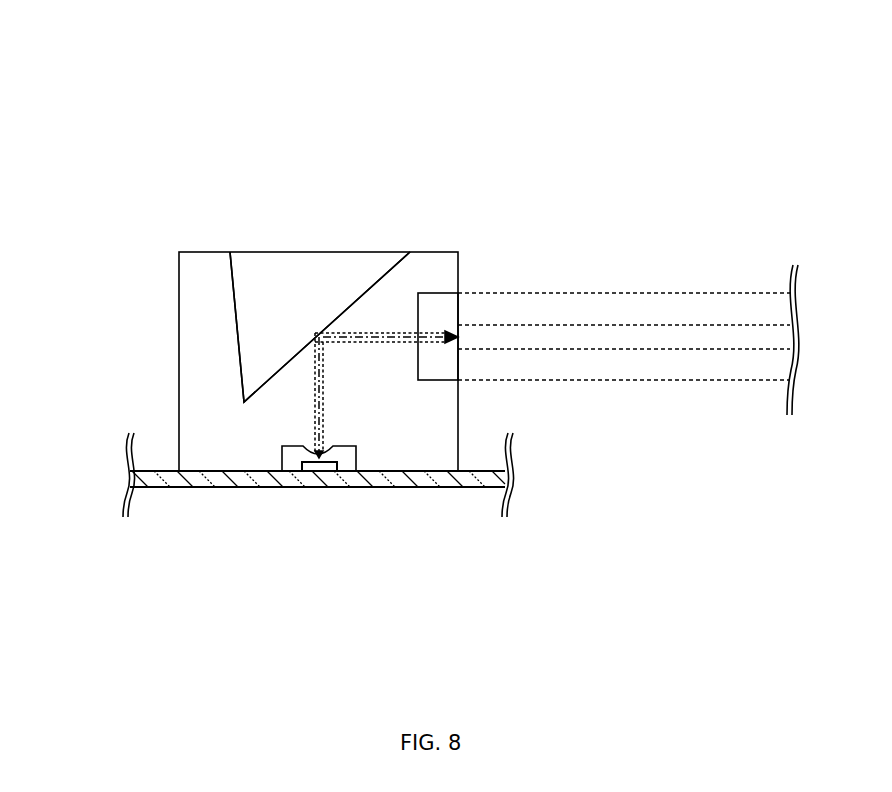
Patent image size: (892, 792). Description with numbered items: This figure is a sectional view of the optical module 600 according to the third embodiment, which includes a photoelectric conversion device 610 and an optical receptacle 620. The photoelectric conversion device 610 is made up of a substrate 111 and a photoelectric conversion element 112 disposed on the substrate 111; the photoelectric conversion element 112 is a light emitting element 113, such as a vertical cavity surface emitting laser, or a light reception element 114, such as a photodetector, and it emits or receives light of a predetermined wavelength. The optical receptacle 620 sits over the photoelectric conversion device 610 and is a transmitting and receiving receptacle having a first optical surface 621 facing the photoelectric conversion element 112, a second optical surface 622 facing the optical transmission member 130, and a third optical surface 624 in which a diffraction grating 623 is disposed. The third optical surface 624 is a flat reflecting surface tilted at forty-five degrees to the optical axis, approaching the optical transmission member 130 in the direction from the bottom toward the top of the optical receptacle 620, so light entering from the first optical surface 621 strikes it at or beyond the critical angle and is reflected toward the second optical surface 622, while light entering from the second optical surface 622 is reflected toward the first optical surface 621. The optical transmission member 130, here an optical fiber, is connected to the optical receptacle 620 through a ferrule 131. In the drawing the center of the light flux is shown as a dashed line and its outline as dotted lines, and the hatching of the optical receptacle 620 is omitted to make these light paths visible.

The optical module 600 is at (677, 98).
The optical receptacle 620 is at (197, 252).
The first optical surface 621 is at (297, 460).
The second optical surface 622 is at (418, 318).
The diffraction grating 623 is at (320, 327).
The third optical surface 624 is at (357, 297).
The optical transmission member 130 is at (575, 332).
The ferrule 131 is at (670, 310).
The substrate 111 is at (245, 487).
The photoelectric conversion element 112 is at (319, 466).
The light emitting element 113 is at (313, 487).
The light reception element 114 is at (319, 466).
The photoelectric conversion device 610 is at (473, 598).